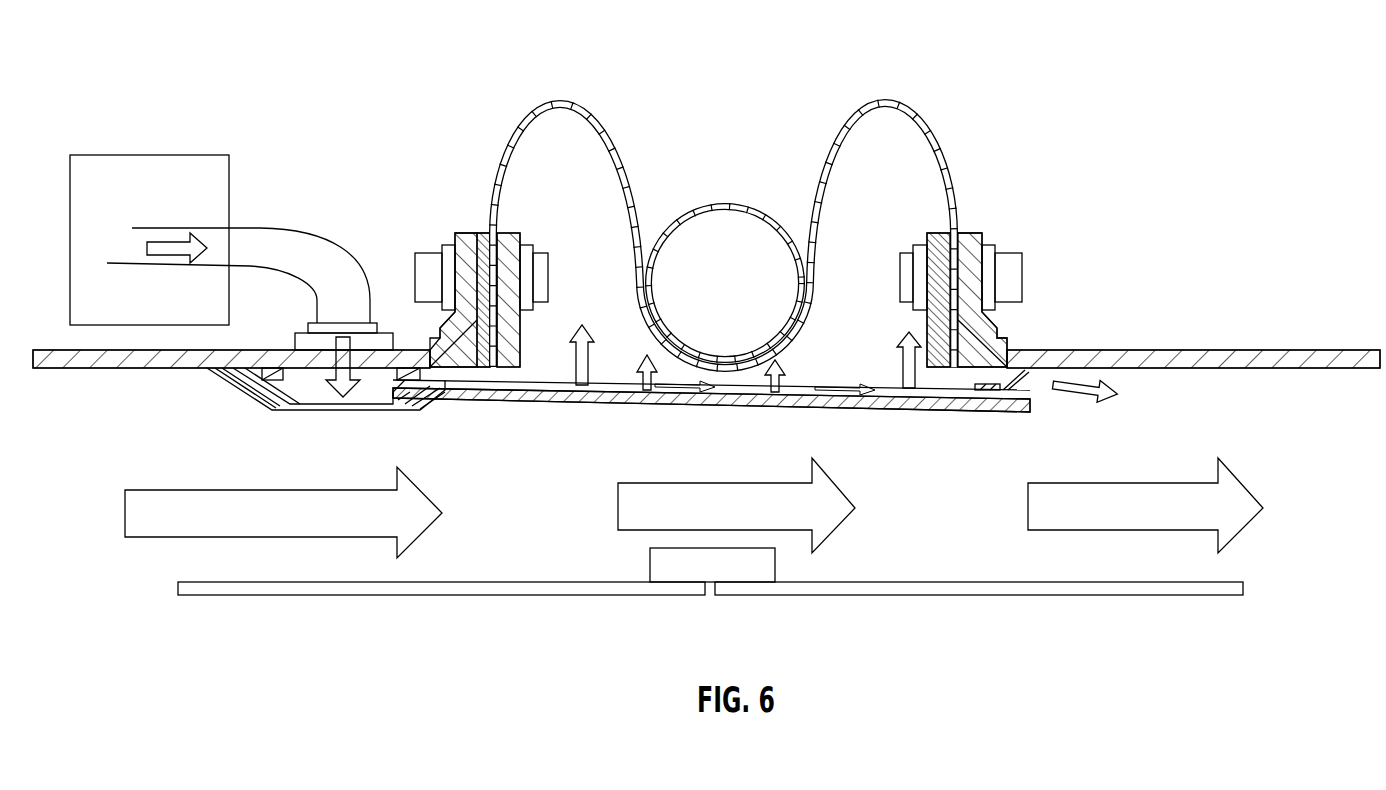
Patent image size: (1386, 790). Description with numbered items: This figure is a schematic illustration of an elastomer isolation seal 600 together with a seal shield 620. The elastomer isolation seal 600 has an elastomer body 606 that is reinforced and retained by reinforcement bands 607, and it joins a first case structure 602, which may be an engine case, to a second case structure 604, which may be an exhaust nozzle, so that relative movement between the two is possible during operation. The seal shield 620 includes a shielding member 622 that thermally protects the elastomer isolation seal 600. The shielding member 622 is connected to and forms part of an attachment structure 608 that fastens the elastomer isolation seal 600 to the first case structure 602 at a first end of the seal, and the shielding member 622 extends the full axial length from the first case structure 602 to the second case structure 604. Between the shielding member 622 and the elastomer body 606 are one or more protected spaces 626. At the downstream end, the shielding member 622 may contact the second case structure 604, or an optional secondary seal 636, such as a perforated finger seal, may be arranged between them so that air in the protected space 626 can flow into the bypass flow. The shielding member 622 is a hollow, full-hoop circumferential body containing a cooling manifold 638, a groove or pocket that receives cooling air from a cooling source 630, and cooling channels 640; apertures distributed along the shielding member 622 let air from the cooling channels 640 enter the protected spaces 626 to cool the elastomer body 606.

The elastomer isolation seal 600 is at (1004, 220).
The first case structure 602 is at (153, 368).
The second case structure 604 is at (1255, 350).
The elastomer body 606 is at (888, 100).
The reinforcement bands 607 is at (723, 205).
The attachment structure 608 is at (445, 224).
The seal shield 620 is at (173, 454).
The shielding member 622 is at (265, 397).
The protected space 626 is at (586, 209).
The cooling source 630 is at (160, 155).
The secondary seal 636 is at (1020, 380).
The cooling manifold 638 is at (373, 390).
The cooling channels 640 is at (625, 396).